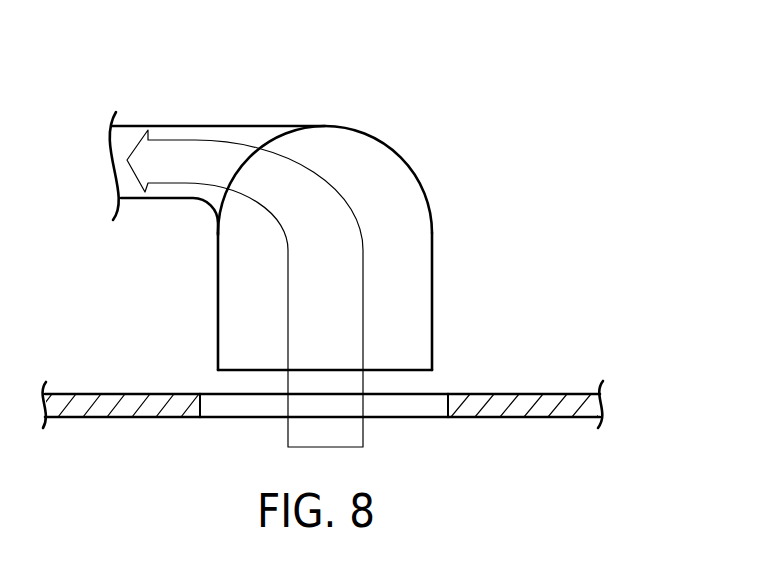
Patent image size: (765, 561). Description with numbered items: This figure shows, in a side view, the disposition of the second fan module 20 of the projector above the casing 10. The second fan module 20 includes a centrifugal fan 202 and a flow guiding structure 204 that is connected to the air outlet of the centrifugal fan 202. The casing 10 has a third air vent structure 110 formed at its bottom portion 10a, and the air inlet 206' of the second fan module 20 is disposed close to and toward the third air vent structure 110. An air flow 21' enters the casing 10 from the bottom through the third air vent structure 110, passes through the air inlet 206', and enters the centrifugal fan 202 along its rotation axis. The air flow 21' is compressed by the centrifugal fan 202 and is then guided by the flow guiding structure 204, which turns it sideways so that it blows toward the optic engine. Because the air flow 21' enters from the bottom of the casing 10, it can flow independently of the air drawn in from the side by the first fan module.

The second fan module 20 is at (407, 112).
The centrifugal fan 202 is at (405, 198).
The flow guiding structure 204 is at (200, 137).
The air inlet 206' is at (320, 421).
The air flow 21' is at (311, 288).
The third air vent structure 110 is at (422, 410).
The bottom portion 10a is at (540, 410).
The casing 10 is at (325, 427).